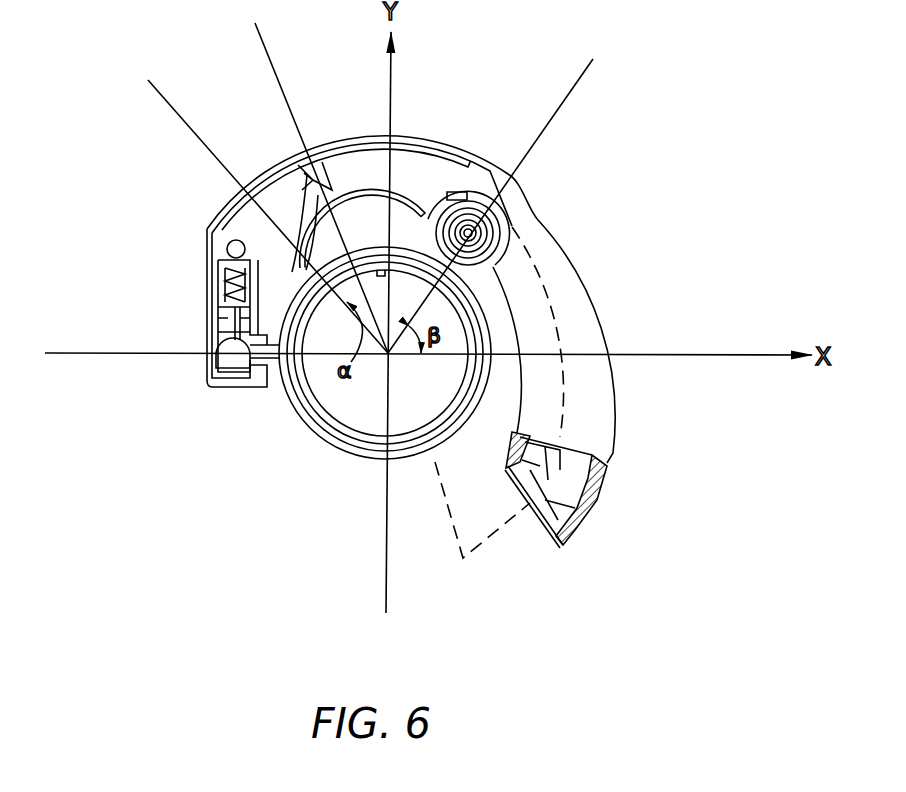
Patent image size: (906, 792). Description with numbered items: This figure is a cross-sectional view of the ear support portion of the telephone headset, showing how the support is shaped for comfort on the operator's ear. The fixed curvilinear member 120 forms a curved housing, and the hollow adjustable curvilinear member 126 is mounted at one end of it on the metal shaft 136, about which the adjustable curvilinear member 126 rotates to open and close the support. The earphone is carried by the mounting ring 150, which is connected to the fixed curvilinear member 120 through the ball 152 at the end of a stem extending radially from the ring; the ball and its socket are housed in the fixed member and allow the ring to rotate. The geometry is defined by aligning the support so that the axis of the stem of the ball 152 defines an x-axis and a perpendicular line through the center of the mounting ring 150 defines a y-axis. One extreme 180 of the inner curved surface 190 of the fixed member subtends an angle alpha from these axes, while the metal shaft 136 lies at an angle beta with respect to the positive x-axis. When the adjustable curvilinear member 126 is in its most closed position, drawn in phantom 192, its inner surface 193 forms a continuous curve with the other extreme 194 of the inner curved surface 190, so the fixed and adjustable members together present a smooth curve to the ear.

The fixed curvilinear member 120 is at (333, 150).
The adjustable curvilinear member 126 is at (586, 293).
The metal shaft 136 is at (480, 233).
The mounting ring 150 is at (363, 460).
The ball 152 is at (220, 345).
The one extreme of the inner curved surface 180 is at (298, 220).
The inner curved surface 190 is at (378, 220).
The phantom most closed position 192 is at (453, 458).
The inner surface of the adjustable curvilinear member 193 is at (513, 400).
The other extreme of the inner curved surface 194 is at (400, 210).